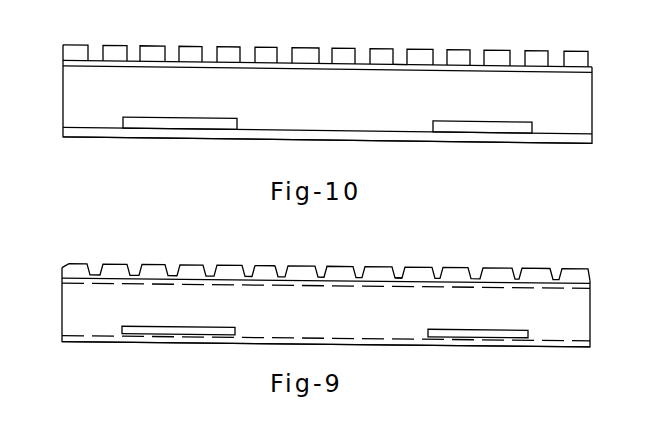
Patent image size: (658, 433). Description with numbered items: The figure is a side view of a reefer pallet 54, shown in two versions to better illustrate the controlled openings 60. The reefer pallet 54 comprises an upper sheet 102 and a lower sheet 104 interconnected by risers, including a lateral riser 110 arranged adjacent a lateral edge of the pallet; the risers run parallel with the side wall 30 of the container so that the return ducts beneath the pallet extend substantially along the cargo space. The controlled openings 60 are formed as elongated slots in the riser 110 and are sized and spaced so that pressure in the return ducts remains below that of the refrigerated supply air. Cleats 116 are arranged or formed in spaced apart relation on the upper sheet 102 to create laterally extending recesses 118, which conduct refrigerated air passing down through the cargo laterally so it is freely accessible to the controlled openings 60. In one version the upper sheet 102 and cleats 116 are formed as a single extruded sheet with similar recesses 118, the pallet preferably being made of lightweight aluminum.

In FIG. 10, the side wall 30 is at (657, 14).
In FIG. 10, the reefer pallet 54 is at (292, 30).
In FIG. 9, the reefer pallet 54 is at (281, 276).
In FIG. 10, the controlled opening 60 is at (165, 125).
In FIG. 9, the controlled opening 60 is at (188, 332).
In FIG. 10, the upper sheet 102 is at (577, 72).
In FIG. 9, the upper sheet 102 is at (565, 288).
In FIG. 10, the lower sheet 104 is at (568, 143).
In FIG. 9, the lower sheet 104 is at (552, 343).
In FIG. 10, the riser 110 is at (327, 94).
In FIG. 9, the riser 110 is at (326, 307).
In FIG. 10, the cleat 116 is at (117, 45).
In FIG. 9, the cleat 116 is at (147, 265).
In FIG. 10, the recess 118 is at (403, 63).
In FIG. 9, the recess 118 is at (399, 276).